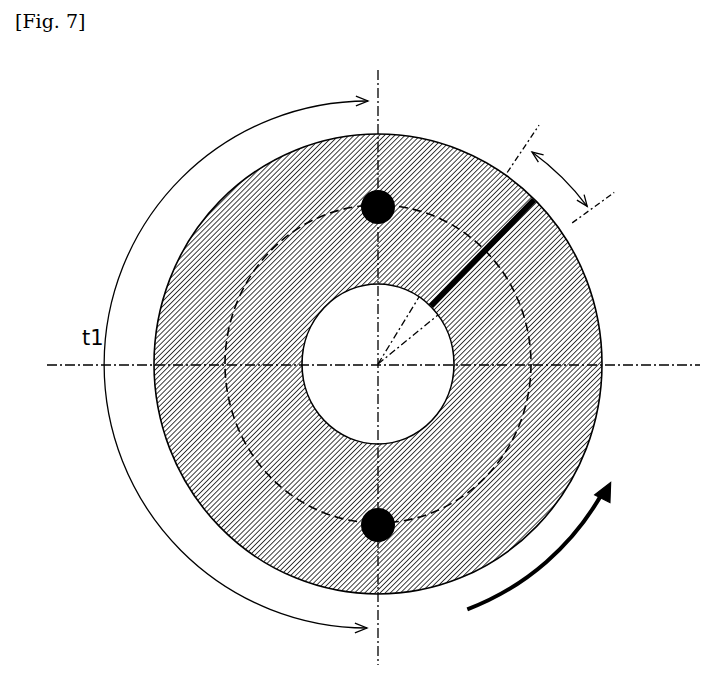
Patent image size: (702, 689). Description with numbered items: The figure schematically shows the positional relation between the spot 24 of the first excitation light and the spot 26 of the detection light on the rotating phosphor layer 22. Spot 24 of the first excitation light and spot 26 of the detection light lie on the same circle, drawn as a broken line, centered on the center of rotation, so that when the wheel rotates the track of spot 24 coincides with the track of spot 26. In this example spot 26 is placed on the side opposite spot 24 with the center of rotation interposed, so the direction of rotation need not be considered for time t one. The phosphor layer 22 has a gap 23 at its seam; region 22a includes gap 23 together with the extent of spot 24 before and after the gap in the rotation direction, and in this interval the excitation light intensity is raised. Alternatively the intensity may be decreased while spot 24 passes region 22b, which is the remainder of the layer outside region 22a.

The phosphor layer 22 is at (601, 402).
The region 22a is at (559, 170).
The region 22b is at (517, 142).
The gap 23 is at (542, 198).
The spot of the first excitation light 24 is at (363, 196).
The spot of the detection light 26 is at (362, 540).